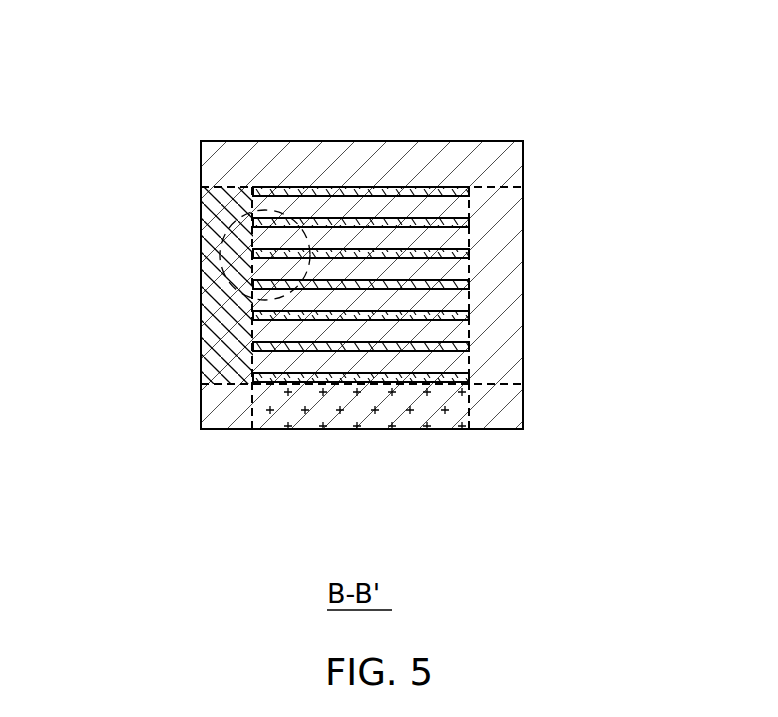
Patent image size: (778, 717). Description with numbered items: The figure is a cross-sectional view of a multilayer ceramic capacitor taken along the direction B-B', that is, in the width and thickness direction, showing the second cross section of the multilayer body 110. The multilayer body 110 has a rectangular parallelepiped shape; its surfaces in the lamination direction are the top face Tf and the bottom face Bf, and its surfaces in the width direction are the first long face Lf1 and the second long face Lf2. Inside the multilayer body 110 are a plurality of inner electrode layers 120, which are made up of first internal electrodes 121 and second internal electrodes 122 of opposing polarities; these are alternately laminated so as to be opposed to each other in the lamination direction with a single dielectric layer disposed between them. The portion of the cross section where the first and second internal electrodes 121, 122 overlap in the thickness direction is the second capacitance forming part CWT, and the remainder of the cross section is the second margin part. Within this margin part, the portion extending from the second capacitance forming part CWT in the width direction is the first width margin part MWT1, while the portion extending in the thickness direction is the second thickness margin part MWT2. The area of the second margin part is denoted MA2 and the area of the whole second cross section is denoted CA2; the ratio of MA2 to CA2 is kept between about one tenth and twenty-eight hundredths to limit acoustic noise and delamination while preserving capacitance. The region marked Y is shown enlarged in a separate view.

The multilayer body 110 is at (360, 141).
The inner electrode layers 120 is at (468, 267).
The first internal electrodes 121 is at (447, 186).
The second internal electrodes 122 is at (458, 219).
The area of the second margin part MA2 is at (253, 160).
The top face Tf is at (440, 141).
The bottom face Bf is at (445, 429).
The first long face Lf1 is at (523, 380).
The second long face Lf2 is at (201, 344).
The area of the second cross section CA2 is at (228, 403).
The first width margin part MWT1 is at (210, 298).
The second thickness margin part MWT2 is at (375, 417).
The second capacitance forming part CWT is at (470, 302).
The region Y is at (228, 232).